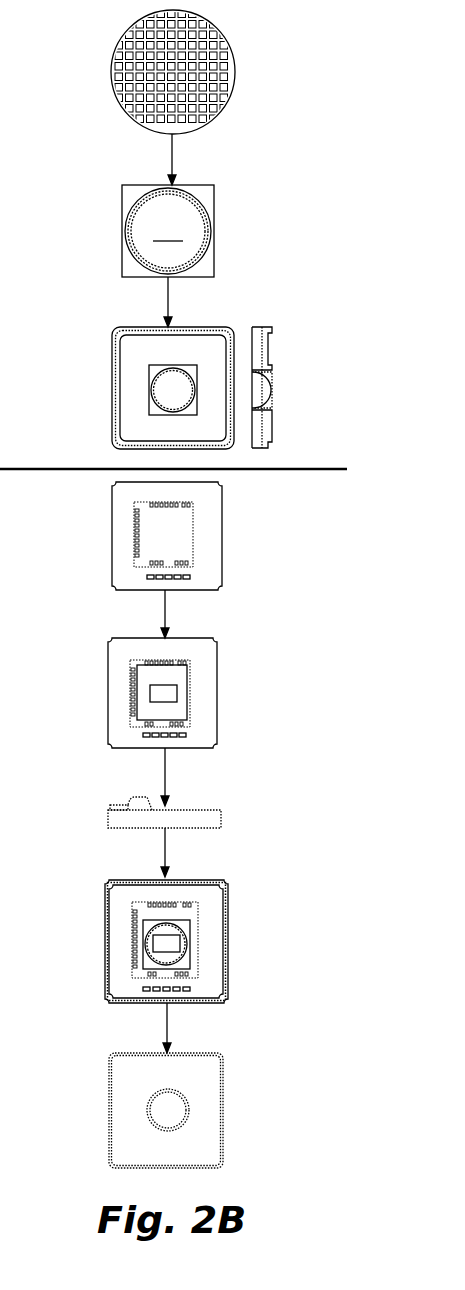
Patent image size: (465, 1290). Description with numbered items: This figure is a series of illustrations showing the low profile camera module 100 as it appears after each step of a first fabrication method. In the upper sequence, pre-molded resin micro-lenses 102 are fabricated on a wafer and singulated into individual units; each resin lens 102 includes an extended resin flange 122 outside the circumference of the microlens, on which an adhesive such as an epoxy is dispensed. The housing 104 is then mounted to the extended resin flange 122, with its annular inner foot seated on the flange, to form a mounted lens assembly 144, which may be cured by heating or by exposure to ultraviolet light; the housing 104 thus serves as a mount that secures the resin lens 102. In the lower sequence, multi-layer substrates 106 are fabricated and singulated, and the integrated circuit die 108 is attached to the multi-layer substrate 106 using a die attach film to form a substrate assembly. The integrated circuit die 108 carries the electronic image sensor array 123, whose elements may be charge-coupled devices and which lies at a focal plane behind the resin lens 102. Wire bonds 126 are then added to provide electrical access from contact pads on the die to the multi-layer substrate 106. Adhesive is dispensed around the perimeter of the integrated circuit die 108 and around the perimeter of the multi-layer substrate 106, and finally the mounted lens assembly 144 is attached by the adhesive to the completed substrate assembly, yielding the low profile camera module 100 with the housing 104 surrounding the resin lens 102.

The low profile camera module 100 is at (236, 1026).
The resin lens 102 is at (200, 38).
The housing 104 is at (138, 353).
The multi-layer substrate 106 is at (207, 533).
The integrated circuit die 108 is at (158, 678).
The extended resin flange 122 is at (265, 408).
The electronic image sensor array 123 is at (165, 695).
The wire bonds 126 is at (127, 798).
The mounted lens assembly 144 is at (228, 297).